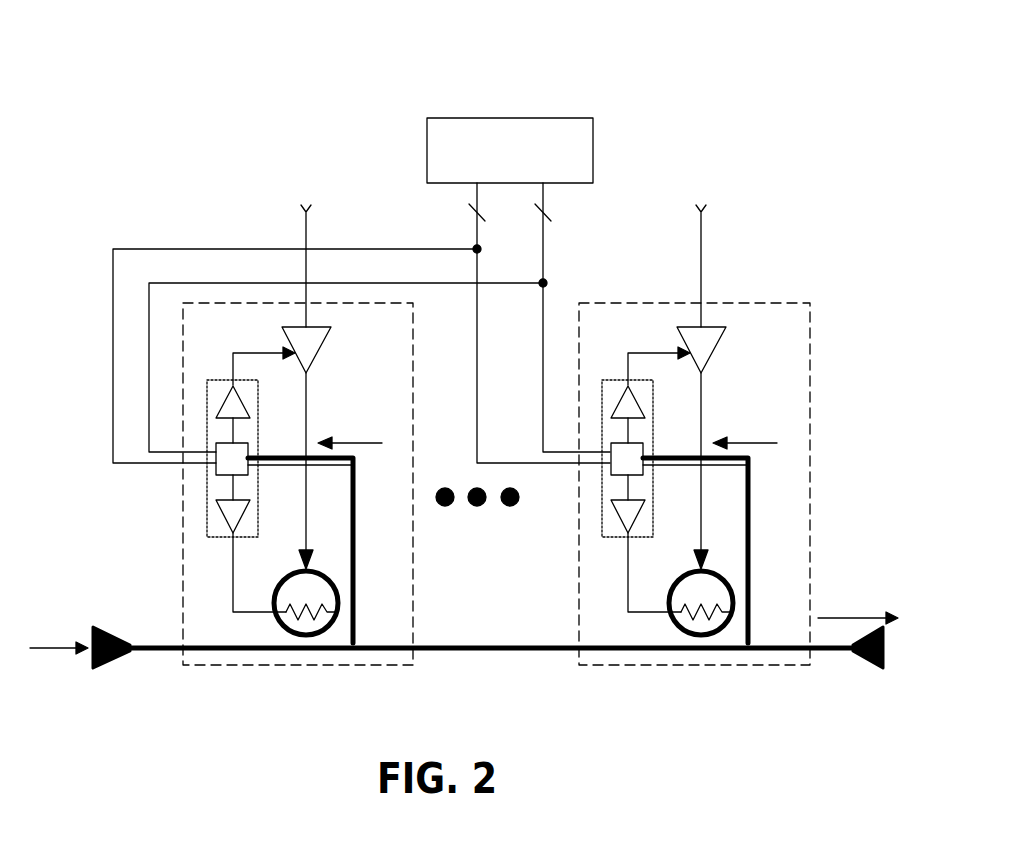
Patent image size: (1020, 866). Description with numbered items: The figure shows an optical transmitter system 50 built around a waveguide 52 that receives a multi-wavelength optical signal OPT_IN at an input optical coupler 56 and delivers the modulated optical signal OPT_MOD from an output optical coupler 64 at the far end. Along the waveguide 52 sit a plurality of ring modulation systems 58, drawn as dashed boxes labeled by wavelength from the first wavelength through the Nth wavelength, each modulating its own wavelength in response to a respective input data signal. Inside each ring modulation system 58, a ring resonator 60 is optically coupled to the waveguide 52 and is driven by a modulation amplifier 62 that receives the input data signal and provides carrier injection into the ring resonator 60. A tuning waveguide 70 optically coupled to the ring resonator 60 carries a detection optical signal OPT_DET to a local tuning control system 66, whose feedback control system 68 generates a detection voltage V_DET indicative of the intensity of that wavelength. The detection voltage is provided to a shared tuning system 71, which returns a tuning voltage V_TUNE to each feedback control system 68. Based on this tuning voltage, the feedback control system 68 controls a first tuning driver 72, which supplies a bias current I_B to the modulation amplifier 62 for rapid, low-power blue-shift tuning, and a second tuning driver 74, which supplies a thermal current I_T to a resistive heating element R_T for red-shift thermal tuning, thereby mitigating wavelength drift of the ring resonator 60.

The optical transmitter system 50 is at (104, 61).
The waveguide 52 is at (512, 651).
The optical coupler 56 is at (110, 660).
The ring modulation system 58 is at (413, 590).
The ring resonator 60 is at (297, 570).
The modulation amplifier 62 is at (318, 347).
The optical coupler 64 is at (863, 665).
The local tuning control system 66 is at (409, 496).
The feedback control system 68 is at (243, 478).
The tuning waveguide 70 is at (356, 505).
The tuning system 71 is at (425, 146).
The first tuning driver 72 is at (243, 403).
The second tuning driver 74 is at (241, 516).